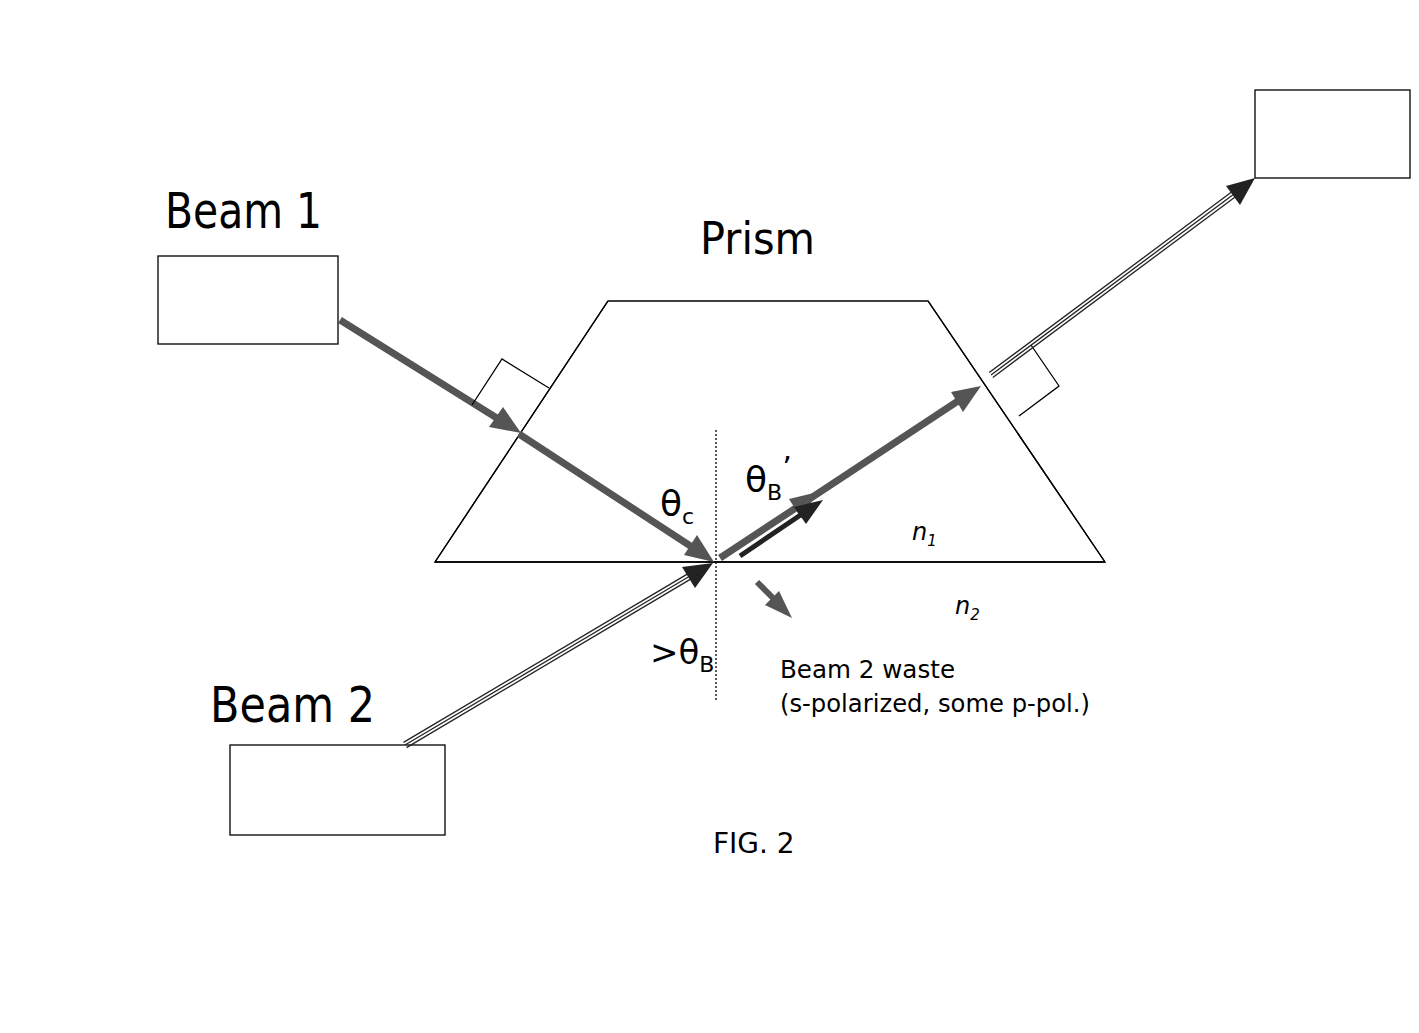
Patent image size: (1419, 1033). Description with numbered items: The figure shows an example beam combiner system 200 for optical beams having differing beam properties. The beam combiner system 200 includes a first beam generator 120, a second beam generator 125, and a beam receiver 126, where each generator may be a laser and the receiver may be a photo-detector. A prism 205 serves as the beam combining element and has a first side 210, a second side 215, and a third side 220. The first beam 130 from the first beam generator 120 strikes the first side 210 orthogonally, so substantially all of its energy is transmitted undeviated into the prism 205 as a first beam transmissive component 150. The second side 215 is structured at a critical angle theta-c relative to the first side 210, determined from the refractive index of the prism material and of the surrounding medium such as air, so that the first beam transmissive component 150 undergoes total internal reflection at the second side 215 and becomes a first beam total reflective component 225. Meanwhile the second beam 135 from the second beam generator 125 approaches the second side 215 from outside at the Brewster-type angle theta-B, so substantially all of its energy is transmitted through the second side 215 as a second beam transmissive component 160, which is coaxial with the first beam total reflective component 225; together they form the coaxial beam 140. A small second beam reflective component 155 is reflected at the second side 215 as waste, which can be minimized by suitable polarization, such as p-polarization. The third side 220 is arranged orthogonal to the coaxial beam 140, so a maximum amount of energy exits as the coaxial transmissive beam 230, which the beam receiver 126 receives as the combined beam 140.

The beam combiner system 200 is at (923, 76).
The prism 205 is at (841, 297).
The first side 210 is at (586, 340).
The second side 215 is at (1046, 564).
The third side 220 is at (1036, 446).
The first beam total reflective component 225 is at (746, 530).
The first beam generator 120 is at (243, 345).
The second beam generator 125 is at (320, 836).
The beam receiver 126 is at (1330, 179).
The first beam 130 is at (465, 388).
The first beam transmissive component 150 is at (606, 486).
The second beam 135 is at (556, 666).
The coaxial beam 140 is at (906, 446).
The second beam transmissive component 160 is at (800, 528).
The second beam reflective component 155 is at (790, 611).
The coaxial transmissive beam 230 is at (1128, 280).